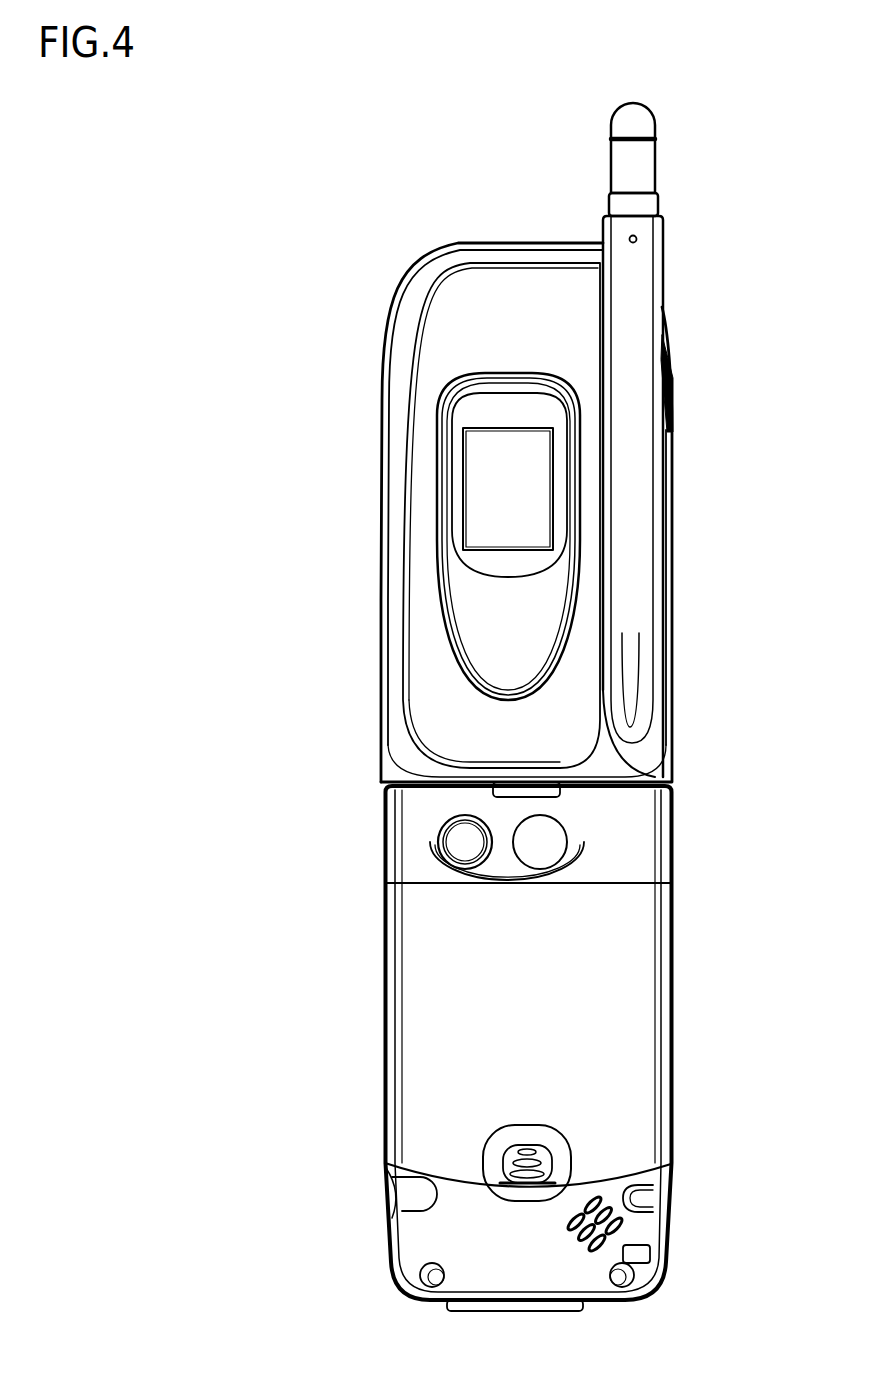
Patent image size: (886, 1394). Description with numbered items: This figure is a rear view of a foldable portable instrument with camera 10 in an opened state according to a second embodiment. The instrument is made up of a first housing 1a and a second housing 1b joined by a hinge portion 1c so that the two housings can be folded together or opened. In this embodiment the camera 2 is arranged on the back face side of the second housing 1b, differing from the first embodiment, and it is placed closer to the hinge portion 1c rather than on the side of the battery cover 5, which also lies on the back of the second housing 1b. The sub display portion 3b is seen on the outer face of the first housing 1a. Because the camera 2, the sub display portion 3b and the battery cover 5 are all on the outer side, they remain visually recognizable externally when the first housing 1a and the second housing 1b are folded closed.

The foldable portable instrument with camera 10 is at (717, 121).
The first housing 1a is at (638, 252).
The second housing 1b is at (650, 1232).
The hinge portion 1c is at (656, 773).
The camera 2 is at (465, 840).
The sub display portion 3b is at (482, 500).
The battery cover 5 is at (620, 1002).